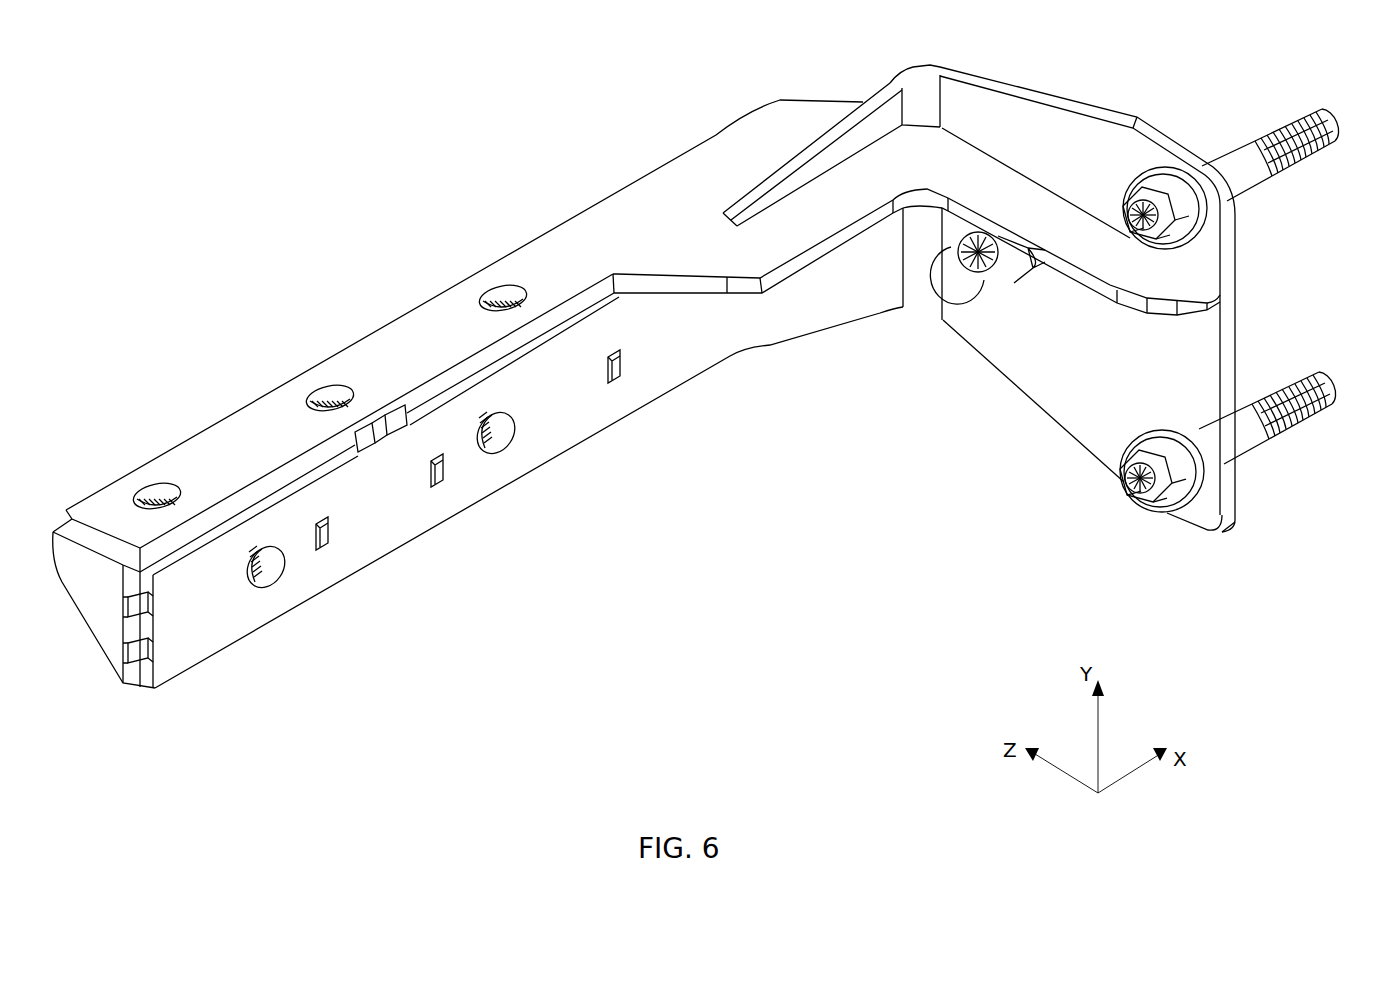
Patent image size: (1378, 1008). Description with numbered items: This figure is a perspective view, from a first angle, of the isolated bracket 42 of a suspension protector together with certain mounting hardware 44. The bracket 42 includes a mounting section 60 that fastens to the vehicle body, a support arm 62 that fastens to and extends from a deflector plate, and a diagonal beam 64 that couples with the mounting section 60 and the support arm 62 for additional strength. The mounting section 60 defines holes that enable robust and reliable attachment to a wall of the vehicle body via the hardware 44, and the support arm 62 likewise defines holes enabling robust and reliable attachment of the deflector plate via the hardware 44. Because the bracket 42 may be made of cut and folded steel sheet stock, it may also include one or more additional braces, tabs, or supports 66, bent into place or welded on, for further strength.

The bracket 42 is at (512, 120).
The mounting hardware 44 is at (1295, 230).
The mounting section 60 is at (1115, 374).
The support arm 62 is at (428, 357).
The diagonal beam 64 is at (928, 169).
The additional braces/tabs/supports 66 is at (90, 603).